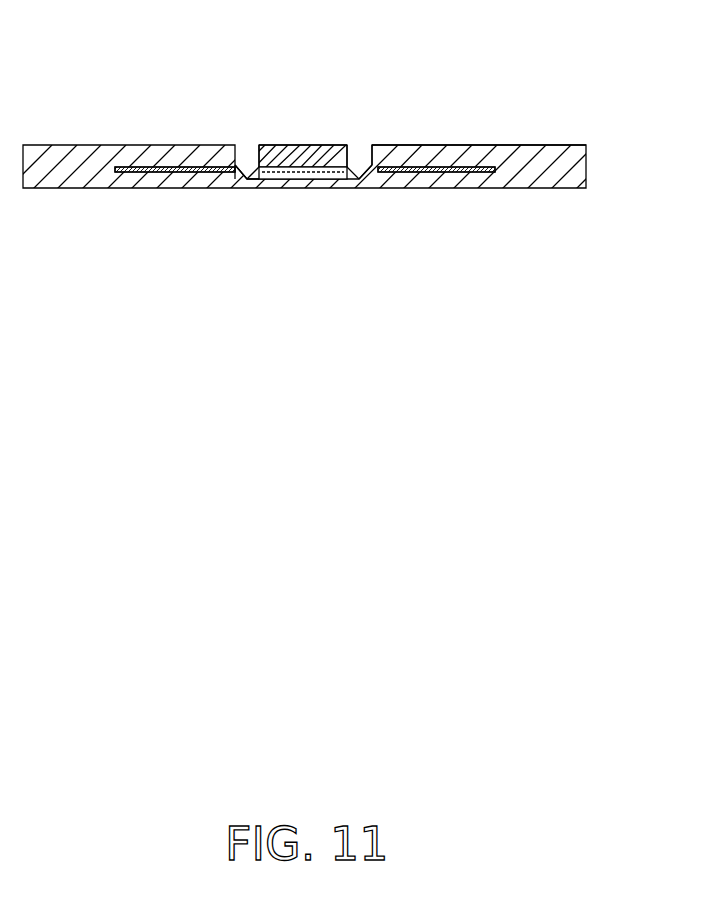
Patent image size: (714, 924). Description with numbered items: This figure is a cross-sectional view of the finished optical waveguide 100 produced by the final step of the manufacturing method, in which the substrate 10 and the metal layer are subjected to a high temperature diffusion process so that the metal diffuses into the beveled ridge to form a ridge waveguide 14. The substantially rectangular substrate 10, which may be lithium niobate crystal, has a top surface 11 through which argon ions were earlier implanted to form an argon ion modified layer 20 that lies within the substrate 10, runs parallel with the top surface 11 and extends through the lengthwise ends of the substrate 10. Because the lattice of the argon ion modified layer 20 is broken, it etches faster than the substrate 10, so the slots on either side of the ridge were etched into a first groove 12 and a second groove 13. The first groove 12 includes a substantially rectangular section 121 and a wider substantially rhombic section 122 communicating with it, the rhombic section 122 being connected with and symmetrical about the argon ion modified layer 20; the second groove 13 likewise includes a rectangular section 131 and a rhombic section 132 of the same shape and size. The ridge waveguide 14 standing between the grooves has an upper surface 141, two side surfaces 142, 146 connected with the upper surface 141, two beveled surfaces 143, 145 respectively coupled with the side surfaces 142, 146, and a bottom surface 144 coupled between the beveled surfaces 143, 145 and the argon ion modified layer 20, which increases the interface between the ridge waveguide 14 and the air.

The optical waveguide 100 is at (339, 174).
The substrate 10 is at (575, 170).
The top surface 11 is at (553, 143).
The argon ion modified layer 20 is at (470, 173).
The second groove 13 is at (446, 123).
The rectangular section 131 is at (363, 158).
The rhombic section 132 is at (374, 165).
The first groove 12 is at (236, 244).
The rectangular section 121 is at (245, 178).
The rhombic section 122 is at (206, 218).
The ridge waveguide 14 is at (316, 171).
The upper surface 141 is at (290, 145).
The side surface 142 is at (256, 146).
The side surface 146 is at (350, 148).
The bottom surface 144 is at (313, 178).
The beveled surface 145 is at (352, 179).
The beveled surface 143 is at (255, 177).